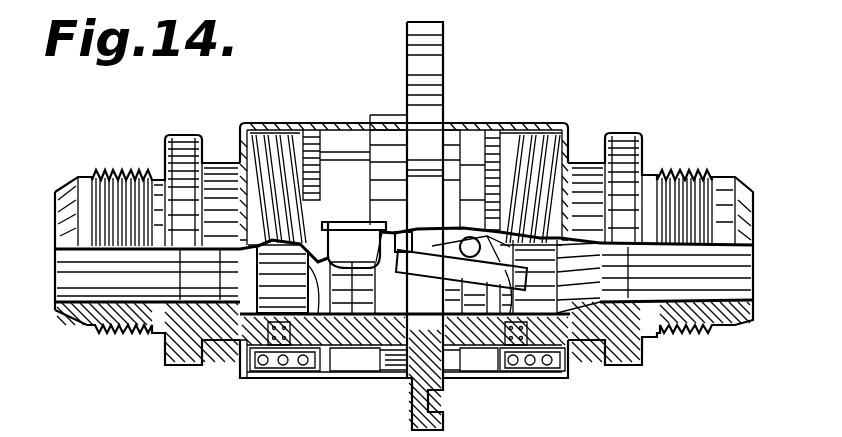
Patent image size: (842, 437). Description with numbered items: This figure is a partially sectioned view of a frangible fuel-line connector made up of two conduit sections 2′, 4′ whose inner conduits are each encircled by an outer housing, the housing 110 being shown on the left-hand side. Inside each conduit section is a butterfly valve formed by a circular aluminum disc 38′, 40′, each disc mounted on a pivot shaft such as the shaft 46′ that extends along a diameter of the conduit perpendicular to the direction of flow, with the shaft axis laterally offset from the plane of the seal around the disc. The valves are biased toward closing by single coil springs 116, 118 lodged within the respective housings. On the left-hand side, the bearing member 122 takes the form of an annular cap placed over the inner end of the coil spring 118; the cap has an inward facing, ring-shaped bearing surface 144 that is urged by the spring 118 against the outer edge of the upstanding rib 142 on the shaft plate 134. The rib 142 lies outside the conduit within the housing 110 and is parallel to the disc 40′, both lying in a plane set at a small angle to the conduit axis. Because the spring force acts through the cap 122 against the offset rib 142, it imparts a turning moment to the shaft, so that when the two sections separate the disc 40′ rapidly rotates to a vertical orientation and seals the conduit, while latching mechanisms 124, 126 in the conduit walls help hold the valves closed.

The conduit section 2′ is at (622, 132).
The conduit section 4′ is at (290, 103).
The circular aluminum disc 38′ is at (475, 355).
The circular aluminum disc 40′ is at (403, 243).
The pivot shaft 46′ is at (472, 240).
The outer housing 110 is at (242, 123).
The coil spring 116 is at (540, 126).
The coil spring 118 is at (265, 148).
The bearing member 122 is at (308, 142).
The latching mechanism 124 is at (583, 342).
The latching mechanism 126 is at (327, 378).
The plate 134 is at (353, 378).
The upstanding rib 142 is at (365, 198).
The bearing surface 144 is at (323, 150).